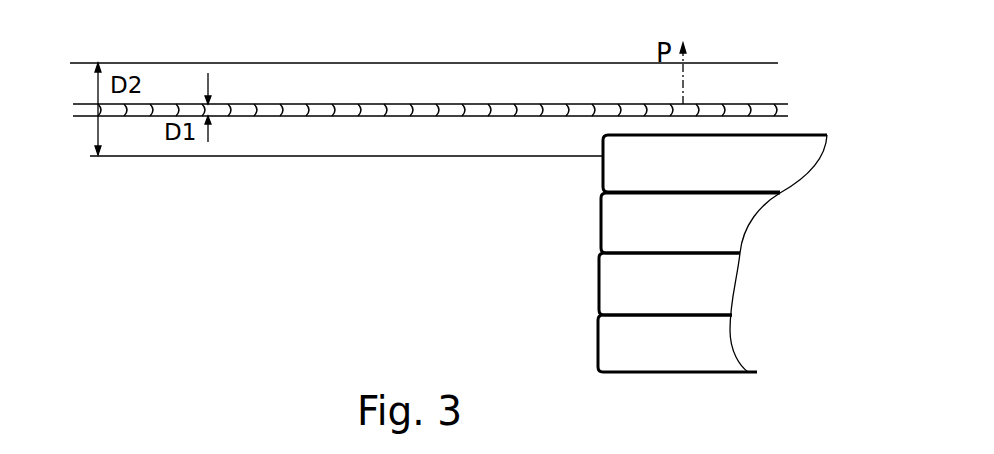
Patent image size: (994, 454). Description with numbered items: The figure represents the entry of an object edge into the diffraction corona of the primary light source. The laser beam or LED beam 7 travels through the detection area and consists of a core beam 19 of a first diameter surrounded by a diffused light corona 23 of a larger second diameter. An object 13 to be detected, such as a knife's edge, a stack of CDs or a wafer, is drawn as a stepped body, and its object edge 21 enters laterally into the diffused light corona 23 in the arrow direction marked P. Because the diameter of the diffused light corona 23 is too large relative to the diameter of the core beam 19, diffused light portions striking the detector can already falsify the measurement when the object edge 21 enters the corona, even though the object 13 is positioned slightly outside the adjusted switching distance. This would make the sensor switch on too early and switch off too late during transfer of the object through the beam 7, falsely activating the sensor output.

The laser beam or LED beam 7 is at (320, 145).
The core beam 19 is at (418, 117).
The diffused light corona 23 is at (318, 96).
The object edge 21 is at (602, 137).
The object 13 is at (595, 175).